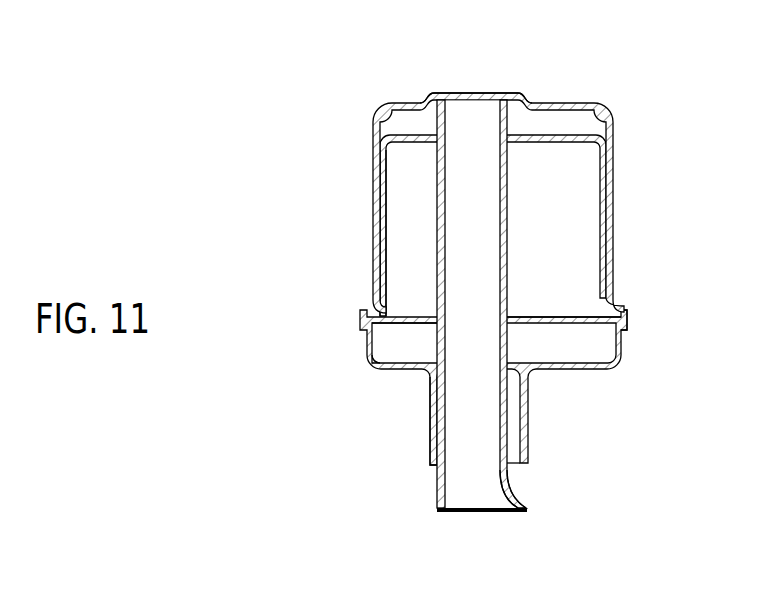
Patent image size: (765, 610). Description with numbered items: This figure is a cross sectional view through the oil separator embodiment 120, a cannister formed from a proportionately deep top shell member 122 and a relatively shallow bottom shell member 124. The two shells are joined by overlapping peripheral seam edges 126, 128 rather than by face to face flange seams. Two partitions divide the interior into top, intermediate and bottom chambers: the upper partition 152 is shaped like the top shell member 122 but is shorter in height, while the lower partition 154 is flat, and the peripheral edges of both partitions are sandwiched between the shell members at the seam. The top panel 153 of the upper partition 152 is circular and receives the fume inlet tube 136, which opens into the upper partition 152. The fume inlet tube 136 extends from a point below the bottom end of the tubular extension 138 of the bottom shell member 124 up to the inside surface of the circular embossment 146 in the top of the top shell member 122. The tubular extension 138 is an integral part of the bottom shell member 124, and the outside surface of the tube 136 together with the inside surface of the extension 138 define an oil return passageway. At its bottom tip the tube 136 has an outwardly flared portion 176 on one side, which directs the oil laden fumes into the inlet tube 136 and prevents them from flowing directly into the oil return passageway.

The oil separator embodiment 120 is at (368, 375).
The top shell member 122 is at (617, 118).
The bottom shell member 124 is at (625, 358).
The peripheral seam edge 126 is at (628, 319).
The peripheral seam edge 128 is at (369, 335).
The fume inlet tube 136 is at (487, 521).
The tubular extension 138 is at (432, 417).
The circular embossment 146 is at (462, 92).
The upper partition 152 is at (392, 217).
The top panel 153 is at (540, 142).
The lower partition 154 is at (531, 317).
The outwardly flared portion 176 is at (520, 506).